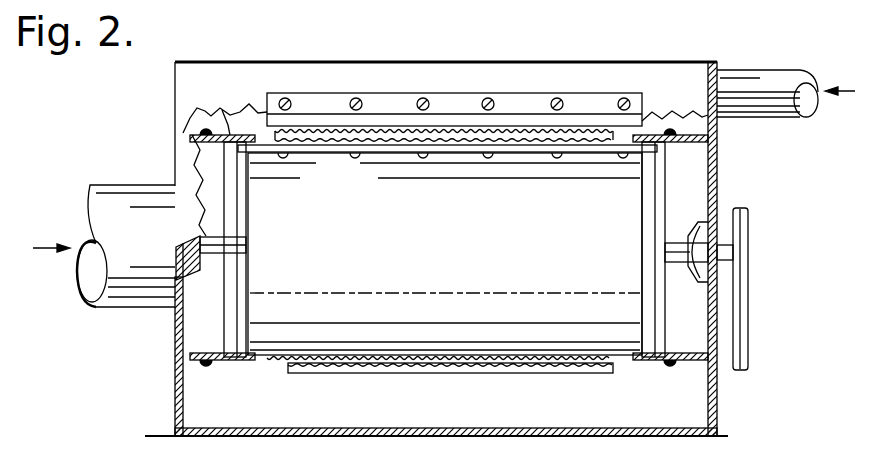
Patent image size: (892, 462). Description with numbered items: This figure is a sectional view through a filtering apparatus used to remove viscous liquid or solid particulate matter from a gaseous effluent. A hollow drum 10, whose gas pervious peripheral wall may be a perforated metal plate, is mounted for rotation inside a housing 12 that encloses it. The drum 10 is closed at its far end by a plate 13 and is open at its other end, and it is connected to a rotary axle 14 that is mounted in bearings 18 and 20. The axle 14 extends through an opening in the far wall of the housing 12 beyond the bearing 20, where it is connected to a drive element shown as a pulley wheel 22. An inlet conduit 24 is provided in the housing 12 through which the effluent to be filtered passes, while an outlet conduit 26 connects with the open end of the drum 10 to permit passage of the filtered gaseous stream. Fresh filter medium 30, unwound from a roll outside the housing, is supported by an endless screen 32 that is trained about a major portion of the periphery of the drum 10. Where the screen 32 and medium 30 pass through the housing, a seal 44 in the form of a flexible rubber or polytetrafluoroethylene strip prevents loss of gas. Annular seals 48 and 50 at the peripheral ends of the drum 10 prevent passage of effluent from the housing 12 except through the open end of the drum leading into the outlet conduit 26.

The hollow drum 10 is at (449, 259).
The housing 12 is at (717, 408).
The plate 13 is at (645, 183).
The rotary axle 14 is at (673, 250).
The bearing 18 is at (190, 272).
The bearing 20 is at (705, 232).
The pulley wheel 22 is at (750, 283).
The inlet conduit 24 is at (432, 63).
The outlet conduit 26 is at (121, 193).
The filter medium 30 is at (383, 372).
The endless screen 32 is at (345, 140).
The seal 44 is at (323, 125).
The annular seal 48 is at (232, 110).
The annular seal 50 is at (680, 118).